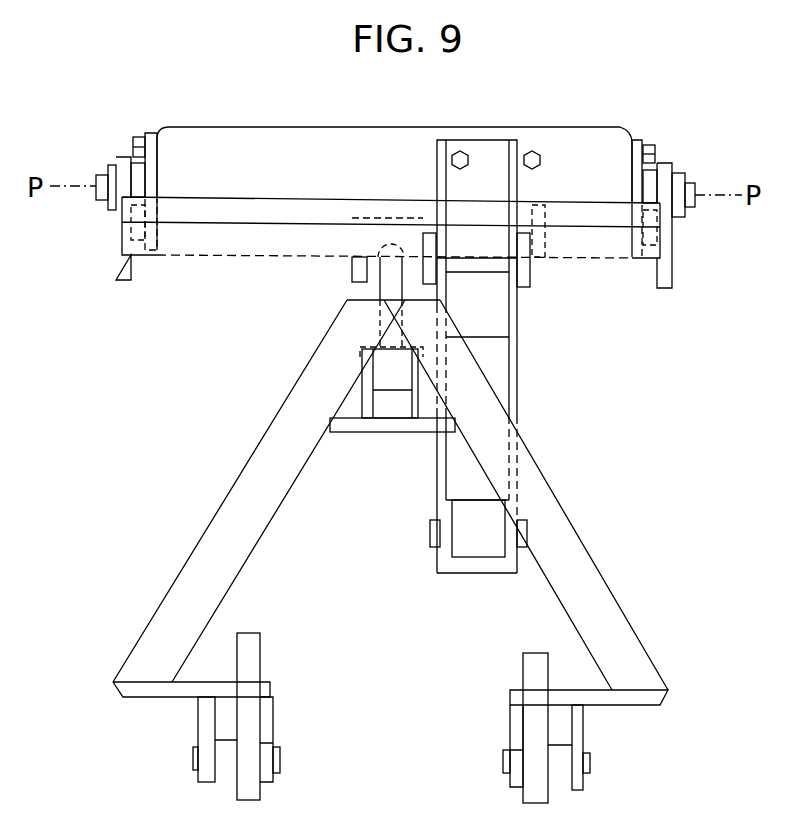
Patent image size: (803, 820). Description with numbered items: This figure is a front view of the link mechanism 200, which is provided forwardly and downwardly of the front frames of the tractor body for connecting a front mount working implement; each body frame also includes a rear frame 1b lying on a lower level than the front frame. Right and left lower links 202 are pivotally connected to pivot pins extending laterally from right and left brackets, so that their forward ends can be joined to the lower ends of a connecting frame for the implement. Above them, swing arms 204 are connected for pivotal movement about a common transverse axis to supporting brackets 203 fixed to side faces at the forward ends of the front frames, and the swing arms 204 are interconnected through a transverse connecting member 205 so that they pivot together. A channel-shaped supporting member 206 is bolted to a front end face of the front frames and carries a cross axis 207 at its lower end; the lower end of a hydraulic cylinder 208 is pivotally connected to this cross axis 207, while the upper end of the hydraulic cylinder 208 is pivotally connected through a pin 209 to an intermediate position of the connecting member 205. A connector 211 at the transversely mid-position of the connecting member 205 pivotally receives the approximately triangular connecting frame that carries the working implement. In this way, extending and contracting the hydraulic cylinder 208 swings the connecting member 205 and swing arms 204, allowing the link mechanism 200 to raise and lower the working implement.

The rear frame 1b is at (226, 133).
The link mechanism 200 is at (188, 548).
The lower links 202 is at (250, 666).
The supporting brackets 203 is at (153, 133).
The swing arms 204 is at (115, 264).
The connecting member 205 is at (242, 258).
The supporting member 206 is at (437, 563).
The cross axis 207 is at (428, 530).
The hydraulic cylinder 208 is at (497, 390).
The pin 209 is at (538, 265).
The connector 211 is at (368, 290).